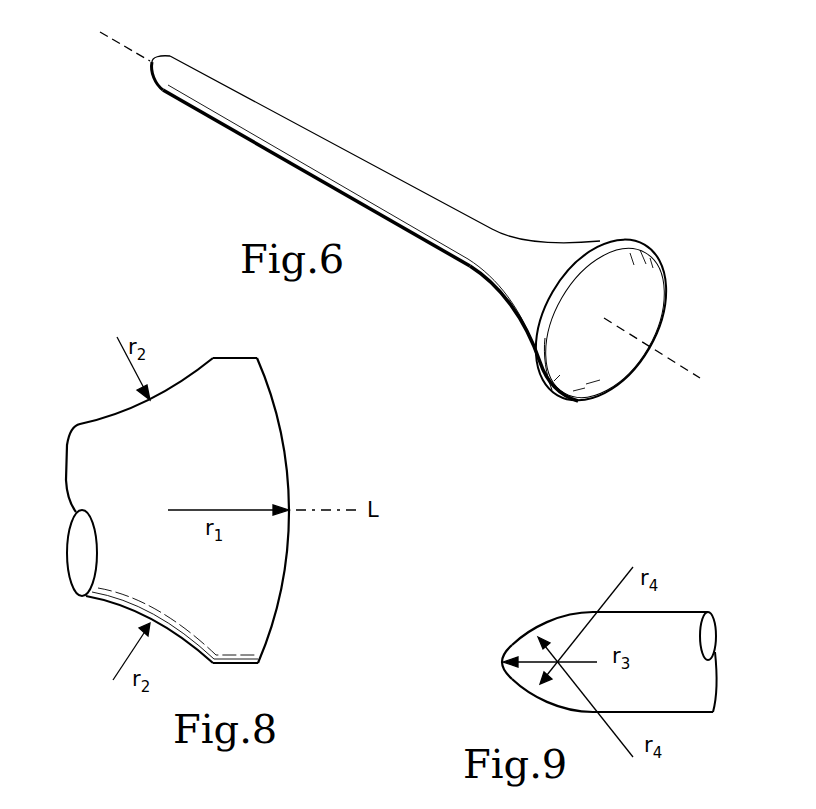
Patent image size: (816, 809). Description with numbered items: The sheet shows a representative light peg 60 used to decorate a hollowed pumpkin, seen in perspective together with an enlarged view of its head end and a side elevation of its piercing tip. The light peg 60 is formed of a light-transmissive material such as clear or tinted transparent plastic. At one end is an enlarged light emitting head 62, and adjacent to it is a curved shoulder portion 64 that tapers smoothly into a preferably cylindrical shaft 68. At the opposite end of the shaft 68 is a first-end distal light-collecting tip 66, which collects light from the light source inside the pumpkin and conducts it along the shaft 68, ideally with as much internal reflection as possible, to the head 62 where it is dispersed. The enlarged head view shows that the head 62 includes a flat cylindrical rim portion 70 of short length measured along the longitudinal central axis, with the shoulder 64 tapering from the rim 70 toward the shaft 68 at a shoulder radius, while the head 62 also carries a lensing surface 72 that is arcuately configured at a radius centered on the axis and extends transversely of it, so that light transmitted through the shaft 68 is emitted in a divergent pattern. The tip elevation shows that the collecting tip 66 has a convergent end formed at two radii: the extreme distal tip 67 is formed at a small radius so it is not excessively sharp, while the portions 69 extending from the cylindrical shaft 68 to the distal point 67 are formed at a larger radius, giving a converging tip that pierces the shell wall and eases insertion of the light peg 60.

In FIG. 6, the light peg 60 is at (438, 122).
In FIG. 6, the light emitting head 62 is at (660, 258).
In FIG. 6, the curved shoulder portion 64 is at (585, 240).
In FIG. 8, the curved shoulder portion 64 is at (130, 414).
In FIG. 6, the light-collecting tip 66 is at (172, 53).
In FIG. 9, the light-collecting tip 66 is at (513, 635).
In FIG. 9, the extreme distal tip 67 is at (503, 663).
In FIG. 6, the shaft 68 is at (304, 120).
In FIG. 9, the shaft 68 is at (670, 620).
In FIG. 9, the portions of distal tip 69 is at (515, 637).
In FIG. 6, the flat cylindrical rim portion 70 is at (543, 340).
In FIG. 8, the flat cylindrical rim portion 70 is at (237, 358).
In FIG. 8, the lensing surface 72 is at (290, 478).